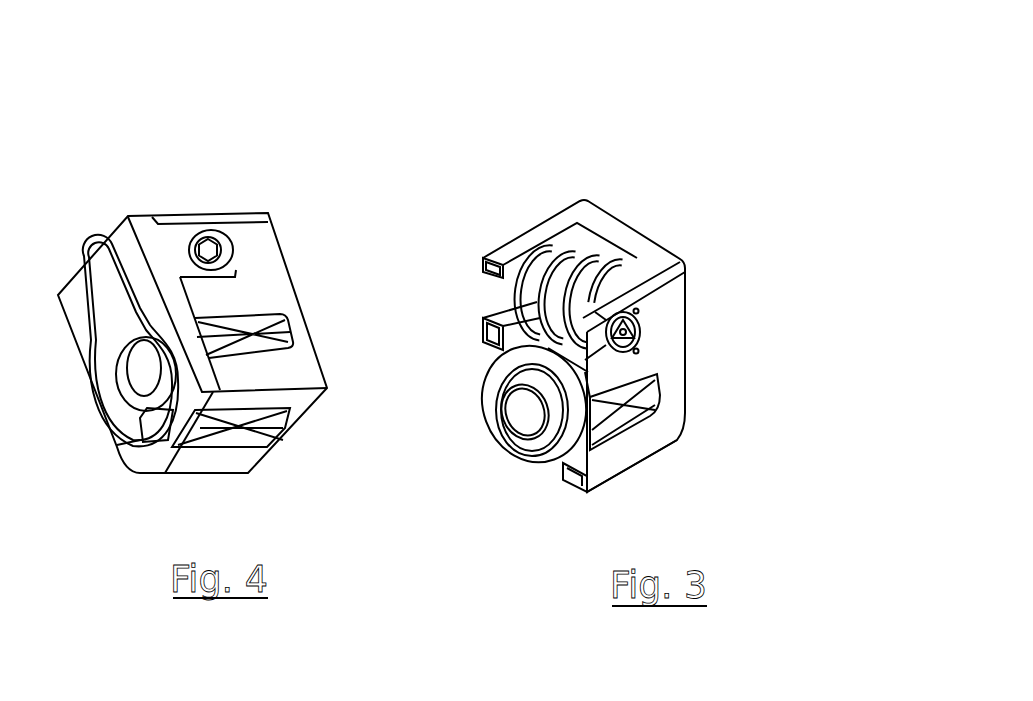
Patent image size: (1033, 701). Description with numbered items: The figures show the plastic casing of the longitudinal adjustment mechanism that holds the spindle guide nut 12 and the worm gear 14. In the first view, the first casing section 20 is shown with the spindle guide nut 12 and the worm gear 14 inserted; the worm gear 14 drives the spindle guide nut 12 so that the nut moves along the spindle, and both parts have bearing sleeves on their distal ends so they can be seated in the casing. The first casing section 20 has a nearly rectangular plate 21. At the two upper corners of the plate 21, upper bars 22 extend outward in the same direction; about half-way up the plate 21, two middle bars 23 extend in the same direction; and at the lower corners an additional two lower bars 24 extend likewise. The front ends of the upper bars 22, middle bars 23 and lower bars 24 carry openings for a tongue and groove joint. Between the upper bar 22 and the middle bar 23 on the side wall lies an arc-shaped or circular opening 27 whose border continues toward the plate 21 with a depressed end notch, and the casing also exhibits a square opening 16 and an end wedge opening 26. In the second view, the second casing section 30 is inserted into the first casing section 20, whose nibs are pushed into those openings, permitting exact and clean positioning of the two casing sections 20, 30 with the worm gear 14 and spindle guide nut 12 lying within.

In FIG. 4, the spindle guide nut 12 is at (277, 347).
In FIG. 3, the spindle guide nut 12 is at (620, 417).
In FIG. 3, the worm gear 14 is at (565, 262).
In FIG. 3, the square opening 16 is at (642, 333).
In FIG. 4, the first casing section 20 is at (292, 279).
In FIG. 3, the first casing section 20 is at (668, 249).
In FIG. 3, the plate 21 is at (605, 228).
In FIG. 3, the upper bar 22 is at (525, 243).
In FIG. 3, the middle bar 23 is at (503, 318).
In FIG. 3, the lower bar 24 is at (618, 457).
In FIG. 3, the end wedge opening 26 is at (635, 310).
In FIG. 3, the circular opening 27 is at (645, 322).
In FIG. 4, the second casing section 30 is at (117, 228).